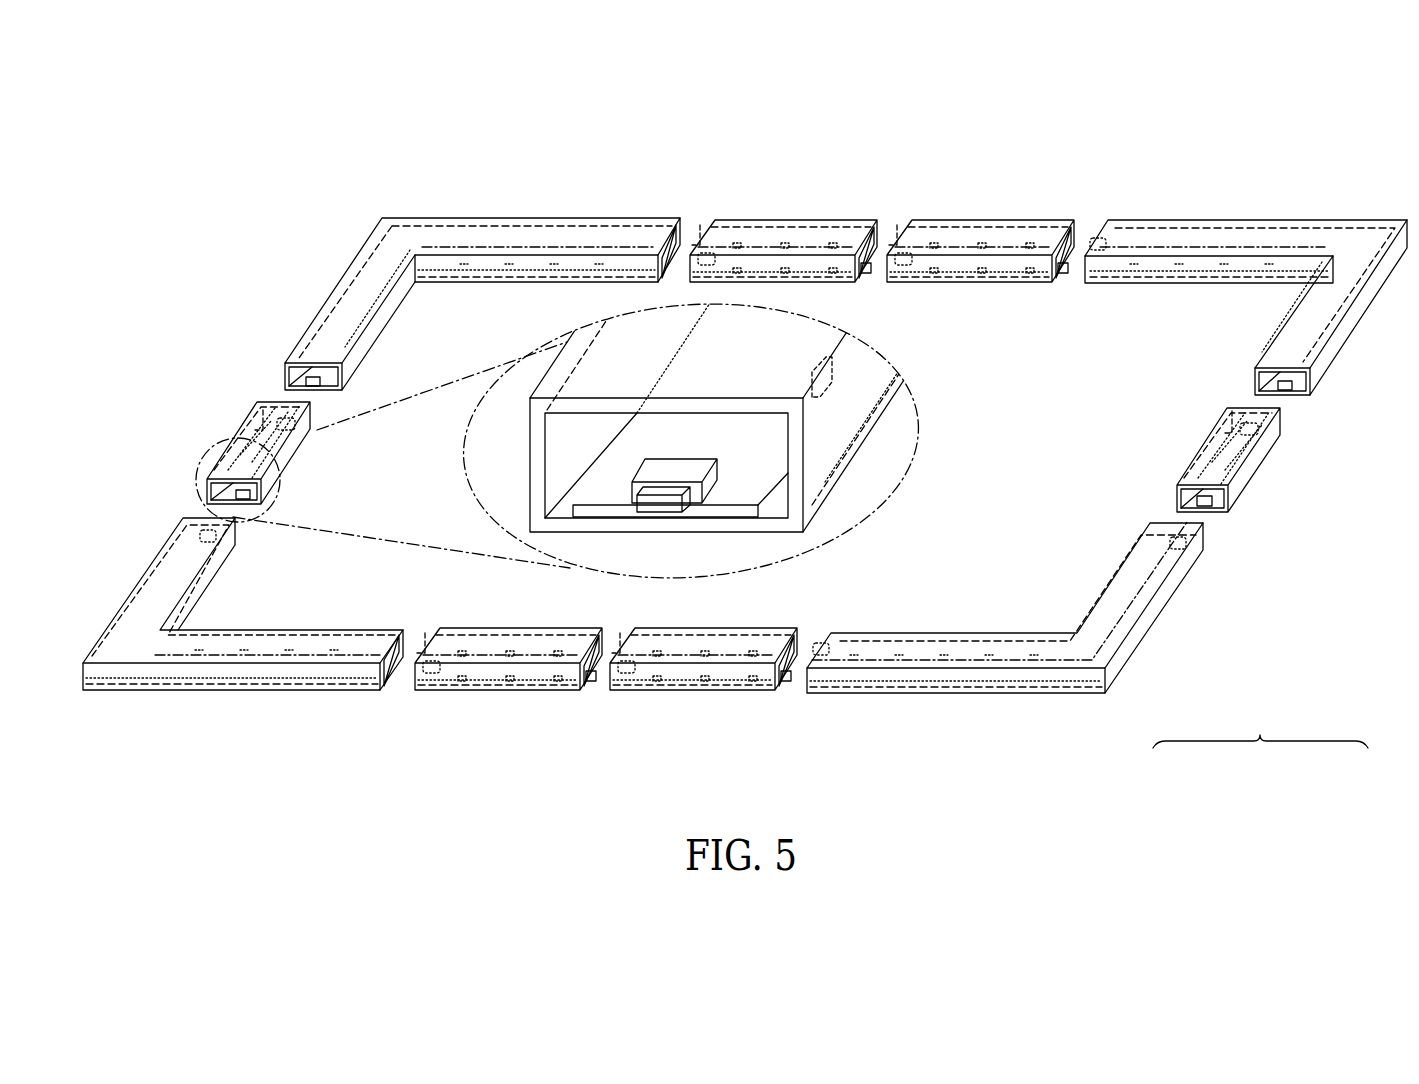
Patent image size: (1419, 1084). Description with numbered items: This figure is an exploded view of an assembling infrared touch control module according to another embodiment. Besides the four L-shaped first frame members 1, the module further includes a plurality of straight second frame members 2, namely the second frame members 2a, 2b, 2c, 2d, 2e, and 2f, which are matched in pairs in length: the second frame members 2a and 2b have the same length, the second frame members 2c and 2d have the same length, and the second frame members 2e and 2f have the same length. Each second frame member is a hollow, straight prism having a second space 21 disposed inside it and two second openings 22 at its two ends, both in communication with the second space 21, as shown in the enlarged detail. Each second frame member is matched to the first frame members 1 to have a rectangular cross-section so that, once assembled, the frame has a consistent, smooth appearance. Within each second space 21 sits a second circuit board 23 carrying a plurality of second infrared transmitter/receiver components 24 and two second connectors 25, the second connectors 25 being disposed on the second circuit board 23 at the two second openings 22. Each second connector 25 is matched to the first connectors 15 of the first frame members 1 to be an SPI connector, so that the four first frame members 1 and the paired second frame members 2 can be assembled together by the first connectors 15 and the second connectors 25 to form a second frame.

The first frame member 1 is at (546, 208).
The second frame members 2 is at (1260, 743).
The second frame member 2a is at (806, 209).
The second frame member 2b is at (469, 705).
The second frame member 2c is at (1002, 209).
The second frame member 2d is at (664, 705).
The second frame member 2e is at (197, 409).
The second frame member 2f is at (1280, 471).
The first connector 15 is at (666, 246).
The second space 21 is at (584, 425).
The second opening 22 is at (1218, 418).
The second circuit board 23 is at (752, 485).
The second infrared transmitter/receiver component 24 is at (750, 495).
The second connector 25 is at (1240, 429).